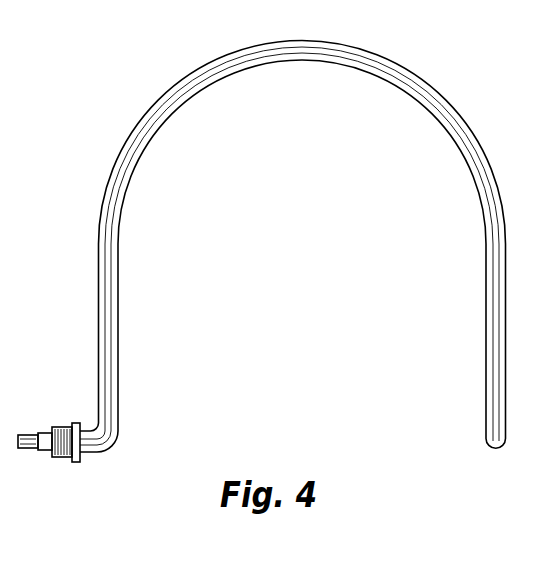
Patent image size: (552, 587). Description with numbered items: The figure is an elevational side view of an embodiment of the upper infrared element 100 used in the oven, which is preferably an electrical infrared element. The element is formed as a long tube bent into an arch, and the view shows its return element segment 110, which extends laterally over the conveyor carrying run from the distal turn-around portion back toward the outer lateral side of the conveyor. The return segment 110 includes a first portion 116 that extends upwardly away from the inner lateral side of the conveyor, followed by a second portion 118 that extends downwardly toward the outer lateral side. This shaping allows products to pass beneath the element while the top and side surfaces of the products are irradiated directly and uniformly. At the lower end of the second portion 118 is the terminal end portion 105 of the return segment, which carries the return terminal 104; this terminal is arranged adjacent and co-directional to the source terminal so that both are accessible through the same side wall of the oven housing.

The upper infrared element 100 is at (262, 268).
The return element segment 110 is at (388, 62).
The first portion 116 is at (489, 283).
The second portion 118 is at (110, 294).
The terminal end portion 105 is at (90, 452).
The return terminal 104 is at (63, 455).